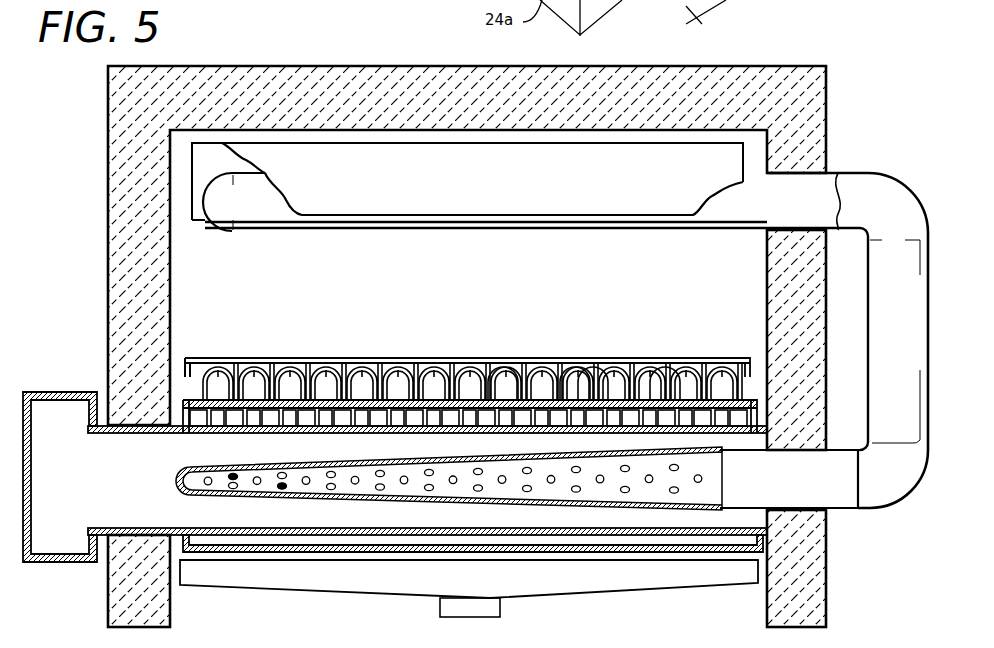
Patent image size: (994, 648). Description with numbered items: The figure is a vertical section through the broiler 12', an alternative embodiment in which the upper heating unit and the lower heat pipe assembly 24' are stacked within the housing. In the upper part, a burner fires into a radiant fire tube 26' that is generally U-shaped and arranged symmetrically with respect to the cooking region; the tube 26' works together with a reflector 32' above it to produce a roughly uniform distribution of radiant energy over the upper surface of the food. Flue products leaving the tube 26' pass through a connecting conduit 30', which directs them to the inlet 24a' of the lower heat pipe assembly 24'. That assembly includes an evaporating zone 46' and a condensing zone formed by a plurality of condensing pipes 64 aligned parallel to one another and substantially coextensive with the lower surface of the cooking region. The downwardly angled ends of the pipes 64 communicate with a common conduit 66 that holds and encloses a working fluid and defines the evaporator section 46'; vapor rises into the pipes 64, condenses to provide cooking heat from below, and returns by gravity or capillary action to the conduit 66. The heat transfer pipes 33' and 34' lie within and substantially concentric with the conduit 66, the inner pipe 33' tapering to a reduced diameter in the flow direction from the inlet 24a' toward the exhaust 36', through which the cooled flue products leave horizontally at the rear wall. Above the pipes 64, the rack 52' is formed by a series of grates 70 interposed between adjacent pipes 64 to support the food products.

The broiler 12' is at (467, 318).
The reflector 32' is at (467, 187).
The radiant fire tube 26' is at (526, 241).
The connecting conduit 30' is at (847, 340).
The inlet 24a' is at (807, 501).
The exhaust 36' is at (60, 458).
The heat transfer pipe 34' is at (427, 467).
The rack 52' is at (467, 340).
The evaporating zone 46' is at (468, 376).
The grates 70 is at (559, 363).
The condensing pipes 64 is at (652, 366).
The inner pipe 33' is at (449, 476).
The common conduit 66 is at (193, 368).
The lower heat pipe assembly 24' is at (469, 590).